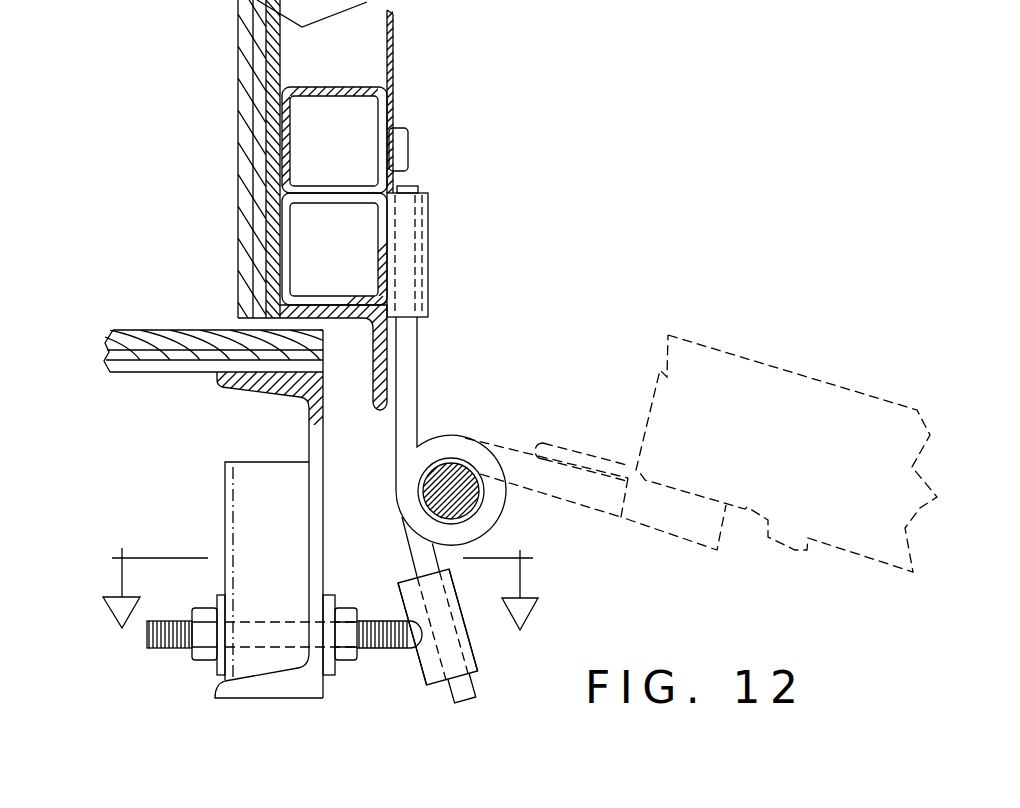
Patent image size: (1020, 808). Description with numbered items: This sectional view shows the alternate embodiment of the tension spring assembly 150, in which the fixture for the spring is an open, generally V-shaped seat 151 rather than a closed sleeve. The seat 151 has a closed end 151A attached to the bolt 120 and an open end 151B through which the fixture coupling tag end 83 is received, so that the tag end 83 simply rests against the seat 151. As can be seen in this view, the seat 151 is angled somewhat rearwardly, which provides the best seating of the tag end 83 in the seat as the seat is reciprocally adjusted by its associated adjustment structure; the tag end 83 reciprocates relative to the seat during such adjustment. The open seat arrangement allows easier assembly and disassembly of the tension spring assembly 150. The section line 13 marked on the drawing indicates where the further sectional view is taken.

The tension spring assembly 150 is at (503, 343).
The bolt 120 is at (385, 622).
The V-shaped seat 151 is at (478, 660).
The closed end 151A is at (420, 672).
The open end 151B is at (473, 612).
The tag end 83 is at (462, 697).
The line 13- 13 is at (322, 568).